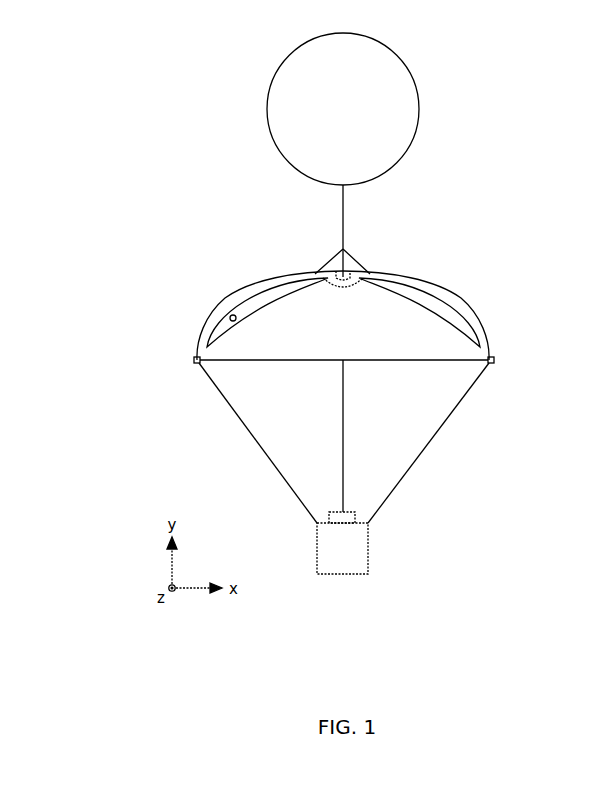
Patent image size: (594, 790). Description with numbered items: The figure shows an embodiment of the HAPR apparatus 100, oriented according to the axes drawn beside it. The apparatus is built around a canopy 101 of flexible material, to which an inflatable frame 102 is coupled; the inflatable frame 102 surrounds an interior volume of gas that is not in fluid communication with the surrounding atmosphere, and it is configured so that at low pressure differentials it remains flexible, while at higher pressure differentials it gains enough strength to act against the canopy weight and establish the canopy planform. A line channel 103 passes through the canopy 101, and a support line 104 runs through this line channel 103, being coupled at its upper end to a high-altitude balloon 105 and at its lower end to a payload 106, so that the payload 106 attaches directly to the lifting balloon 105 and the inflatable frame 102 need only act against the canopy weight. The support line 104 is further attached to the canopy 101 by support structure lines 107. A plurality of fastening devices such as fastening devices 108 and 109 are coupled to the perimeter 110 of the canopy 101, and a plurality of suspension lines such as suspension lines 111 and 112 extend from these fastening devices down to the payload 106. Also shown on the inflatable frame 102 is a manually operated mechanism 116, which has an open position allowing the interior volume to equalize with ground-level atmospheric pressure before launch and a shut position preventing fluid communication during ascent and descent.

The HAPR apparatus 100 is at (205, 241).
The canopy 101 is at (438, 288).
The inflatable frame 102 is at (452, 318).
The line channel 103 is at (346, 271).
The support line 104 is at (340, 217).
The high-altitude balloon 105 is at (343, 109).
The payload 106 is at (342, 543).
The support structure lines 107 is at (328, 261).
The fastening device 108 is at (194, 364).
The fastening device 109 is at (496, 365).
The perimeter 110 is at (316, 363).
The suspension line 111 is at (242, 425).
The suspension line 112 is at (435, 434).
The manually operated mechanism 116 is at (236, 321).